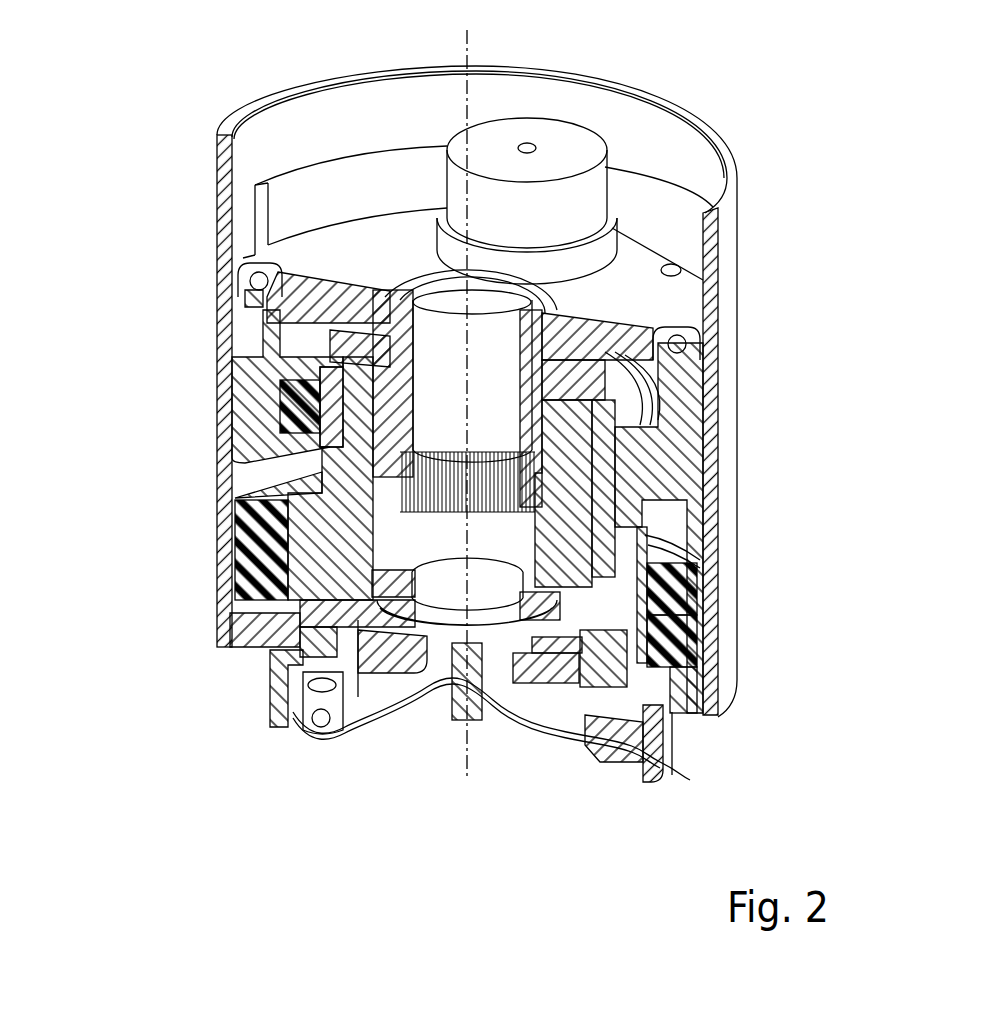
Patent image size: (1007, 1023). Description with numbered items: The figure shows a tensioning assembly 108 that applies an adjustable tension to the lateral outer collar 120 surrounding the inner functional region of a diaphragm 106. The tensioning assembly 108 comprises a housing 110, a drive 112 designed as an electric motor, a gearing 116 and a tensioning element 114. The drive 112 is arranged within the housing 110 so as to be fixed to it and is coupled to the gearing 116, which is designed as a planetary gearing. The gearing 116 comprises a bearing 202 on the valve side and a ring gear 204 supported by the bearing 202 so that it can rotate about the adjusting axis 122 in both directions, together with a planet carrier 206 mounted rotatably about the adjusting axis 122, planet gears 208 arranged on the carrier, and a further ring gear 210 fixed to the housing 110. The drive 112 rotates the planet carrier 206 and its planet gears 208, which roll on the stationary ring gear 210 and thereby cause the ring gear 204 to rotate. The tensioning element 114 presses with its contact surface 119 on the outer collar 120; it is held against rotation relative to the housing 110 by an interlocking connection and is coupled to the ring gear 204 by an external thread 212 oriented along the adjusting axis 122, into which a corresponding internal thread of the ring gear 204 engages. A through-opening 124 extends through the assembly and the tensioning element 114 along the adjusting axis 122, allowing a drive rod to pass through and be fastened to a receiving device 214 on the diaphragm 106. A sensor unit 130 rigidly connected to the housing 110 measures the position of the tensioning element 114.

The diaphragm 106 is at (640, 760).
The tensioning assembly 108 is at (180, 383).
The housing 110 is at (232, 470).
The drive 112 is at (545, 199).
The tensioning element 114 is at (640, 733).
The gearing 116 is at (580, 527).
The contact surface 119 is at (328, 720).
The outer collar 120 is at (303, 682).
The adjusting axis 122 is at (446, 54).
The through-opening 124 is at (420, 367).
The sensor unit 130 is at (258, 622).
The bearing 202 is at (665, 588).
The ring gear 204 is at (660, 638).
The planet carrier 206 is at (548, 437).
The planet gears 208 is at (325, 517).
The ring gear 210 is at (673, 467).
The external thread 212 is at (600, 668).
The receiving device 214 is at (413, 695).